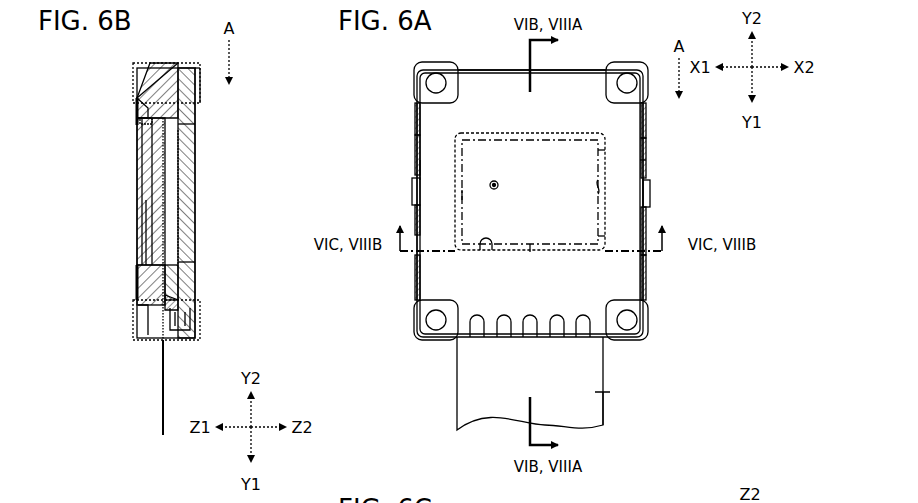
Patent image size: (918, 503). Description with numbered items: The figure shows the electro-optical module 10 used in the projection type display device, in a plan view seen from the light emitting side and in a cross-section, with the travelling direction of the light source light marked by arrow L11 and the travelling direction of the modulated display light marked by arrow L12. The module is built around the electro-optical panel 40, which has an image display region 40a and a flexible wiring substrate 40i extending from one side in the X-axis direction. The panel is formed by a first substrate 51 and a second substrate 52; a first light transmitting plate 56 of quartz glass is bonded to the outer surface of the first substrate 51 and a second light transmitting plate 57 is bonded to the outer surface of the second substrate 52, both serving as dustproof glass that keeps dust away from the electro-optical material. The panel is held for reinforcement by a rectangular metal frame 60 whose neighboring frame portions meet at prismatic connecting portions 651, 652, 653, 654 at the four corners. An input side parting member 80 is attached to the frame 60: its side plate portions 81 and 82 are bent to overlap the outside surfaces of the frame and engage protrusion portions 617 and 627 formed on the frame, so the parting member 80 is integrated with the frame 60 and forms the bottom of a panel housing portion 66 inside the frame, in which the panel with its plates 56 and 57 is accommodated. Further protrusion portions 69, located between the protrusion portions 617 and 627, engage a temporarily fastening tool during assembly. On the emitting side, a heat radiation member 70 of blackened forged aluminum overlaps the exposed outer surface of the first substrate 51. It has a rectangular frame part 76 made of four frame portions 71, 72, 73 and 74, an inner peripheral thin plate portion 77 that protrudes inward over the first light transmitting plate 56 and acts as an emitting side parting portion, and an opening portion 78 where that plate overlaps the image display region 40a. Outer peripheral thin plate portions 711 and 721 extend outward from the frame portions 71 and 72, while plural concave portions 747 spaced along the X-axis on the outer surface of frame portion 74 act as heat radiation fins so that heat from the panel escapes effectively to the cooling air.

In FIG. 6B, the electro-optical module 10 is at (86, 84).
In FIG. 6A, the electro-optical module 10 is at (645, 60).
In FIG. 6B, the electro-optical panel 40 is at (70, 208).
In FIG. 6A, the electro-optical panel 40 is at (514, 150).
In FIG. 6A, the image display region 40a is at (490, 134).
In FIG. 6B, the flexible wiring substrate 40i is at (162, 406).
In FIG. 6A, the flexible wiring substrate 40i is at (604, 396).
In FIG. 6B, the first substrate 51 is at (158, 172).
In FIG. 6B, the second substrate 52 is at (148, 192).
In FIG. 6B, the first light transmitting plate 56 is at (188, 214).
In FIG. 6A, the first light transmitting plate 56 is at (546, 152).
In FIG. 6B, the second light transmitting plate 57 is at (144, 222).
In FIG. 6B, the frame 60 is at (172, 62).
In FIG. 6A, the frame 60 is at (422, 338).
In FIG. 6B, the panel housing portion 66 is at (140, 124).
In FIG. 6A, the protrusion portion 69 is at (412, 194).
In FIG. 6B, the heat radiation member 70 is at (200, 285).
In FIG. 6A, the heat radiation member 70 is at (640, 176).
In FIG. 6A, the frame portion 71 is at (606, 155).
In FIG. 6A, the frame portion 72 is at (450, 194).
In FIG. 6B, the frame portion 73 is at (162, 86).
In FIG. 6A, the frame portion 73 is at (588, 72).
In FIG. 6B, the frame portion 74 is at (176, 306).
In FIG. 6A, the frame portion 74 is at (530, 256).
In FIG. 6B, the rectangular frame part 76 is at (146, 104).
In FIG. 6A, the rectangular frame part 76 is at (606, 236).
In FIG. 6B, the inner peripheral thin plate portion 77 is at (193, 126).
In FIG. 6A, the inner peripheral thin plate portion 77 is at (486, 252).
In FIG. 6B, the opening portion 78 is at (194, 140).
In FIG. 6A, the opening portion 78 is at (600, 188).
In FIG. 6B, the input side parting member 80 is at (134, 287).
In FIG. 6A, the side plate portion 81 is at (647, 158).
In FIG. 6A, the side plate portion 82 is at (417, 118).
In FIG. 6A, the protrusion portion 617 is at (648, 130).
In FIG. 6A, the protrusion portion 627 is at (417, 140).
In FIG. 6B, the connecting portion 651 is at (201, 92).
In FIG. 6A, the connecting portion 651 is at (622, 64).
In FIG. 6A, the connecting portion 652 is at (424, 72).
In FIG. 6B, the connecting portion 653 is at (201, 330).
In FIG. 6A, the connecting portion 653 is at (642, 330).
In FIG. 6A, the connecting portion 654 is at (418, 318).
In FIG. 6A, the outer peripheral thin plate portion 711 is at (646, 168).
In FIG. 6A, the outer peripheral thin plate portion 721 is at (420, 172).
In FIG. 6A, the concave portion 747 is at (530, 316).
In FIG. 6B, the travelling direction of light source light L11 is at (118, 155).
In FIG. 6B, the travelling direction of display light L12 is at (213, 155).